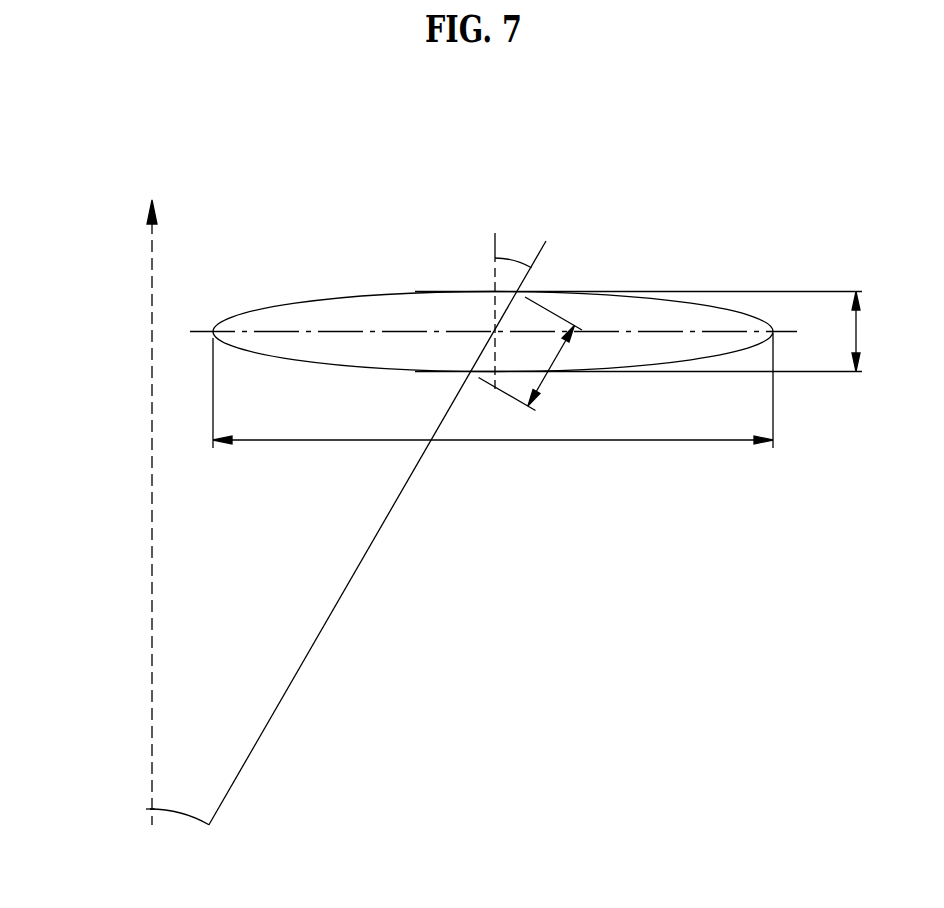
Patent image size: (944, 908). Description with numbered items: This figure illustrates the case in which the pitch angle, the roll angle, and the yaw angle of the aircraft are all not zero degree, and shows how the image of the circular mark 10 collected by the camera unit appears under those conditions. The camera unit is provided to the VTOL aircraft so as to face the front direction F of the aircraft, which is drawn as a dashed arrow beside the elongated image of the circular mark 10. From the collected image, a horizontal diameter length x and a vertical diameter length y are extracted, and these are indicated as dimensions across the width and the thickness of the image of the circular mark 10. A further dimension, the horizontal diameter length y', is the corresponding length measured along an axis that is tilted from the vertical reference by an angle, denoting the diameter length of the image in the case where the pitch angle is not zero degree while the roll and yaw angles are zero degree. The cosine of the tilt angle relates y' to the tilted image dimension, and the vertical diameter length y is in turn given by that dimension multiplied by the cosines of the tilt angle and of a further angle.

The circular mark 10 is at (367, 295).
The front direction F is at (152, 462).
The horizontal diameter length x is at (493, 404).
The vertical diameter length y is at (651, 332).
The horizontal diameter length in pitched case y' is at (531, 354).